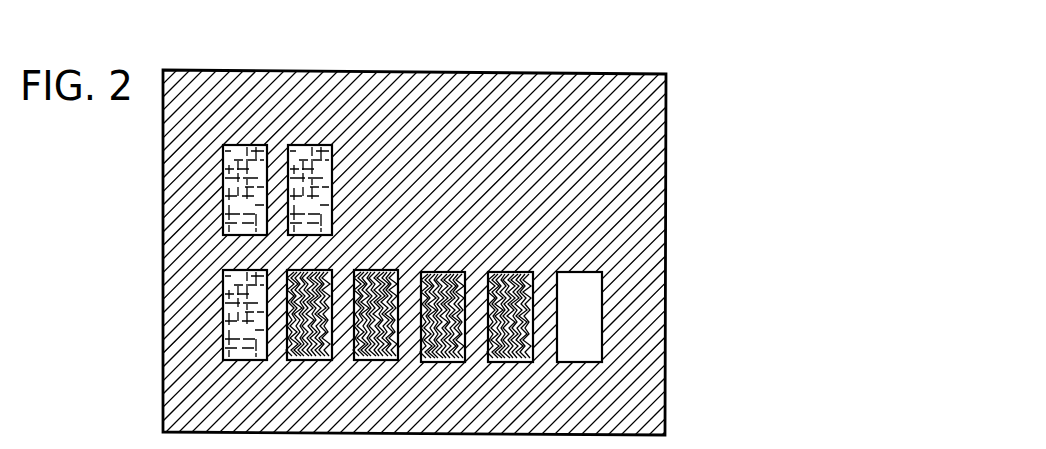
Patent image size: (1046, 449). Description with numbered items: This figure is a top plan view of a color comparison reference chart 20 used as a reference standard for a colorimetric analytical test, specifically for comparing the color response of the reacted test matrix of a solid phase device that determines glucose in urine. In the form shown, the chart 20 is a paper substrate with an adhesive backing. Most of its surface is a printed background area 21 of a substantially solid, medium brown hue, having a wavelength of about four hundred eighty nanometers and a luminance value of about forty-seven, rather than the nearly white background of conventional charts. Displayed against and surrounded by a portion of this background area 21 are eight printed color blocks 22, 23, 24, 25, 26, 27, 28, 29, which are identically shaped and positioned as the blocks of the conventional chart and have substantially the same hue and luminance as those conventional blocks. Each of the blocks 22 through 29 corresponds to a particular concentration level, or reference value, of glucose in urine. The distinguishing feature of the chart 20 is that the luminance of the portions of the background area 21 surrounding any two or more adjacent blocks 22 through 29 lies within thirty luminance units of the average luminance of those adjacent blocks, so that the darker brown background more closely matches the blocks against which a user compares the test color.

The color chart 20 is at (278, 70).
The background area 21 is at (645, 382).
The color block 22 is at (596, 258).
The color block 23 is at (526, 258).
The color block 24 is at (458, 258).
The color block 25 is at (390, 258).
The color block 26 is at (324, 258).
The color block 27 is at (243, 258).
The color block 28 is at (328, 129).
The color block 29 is at (250, 129).